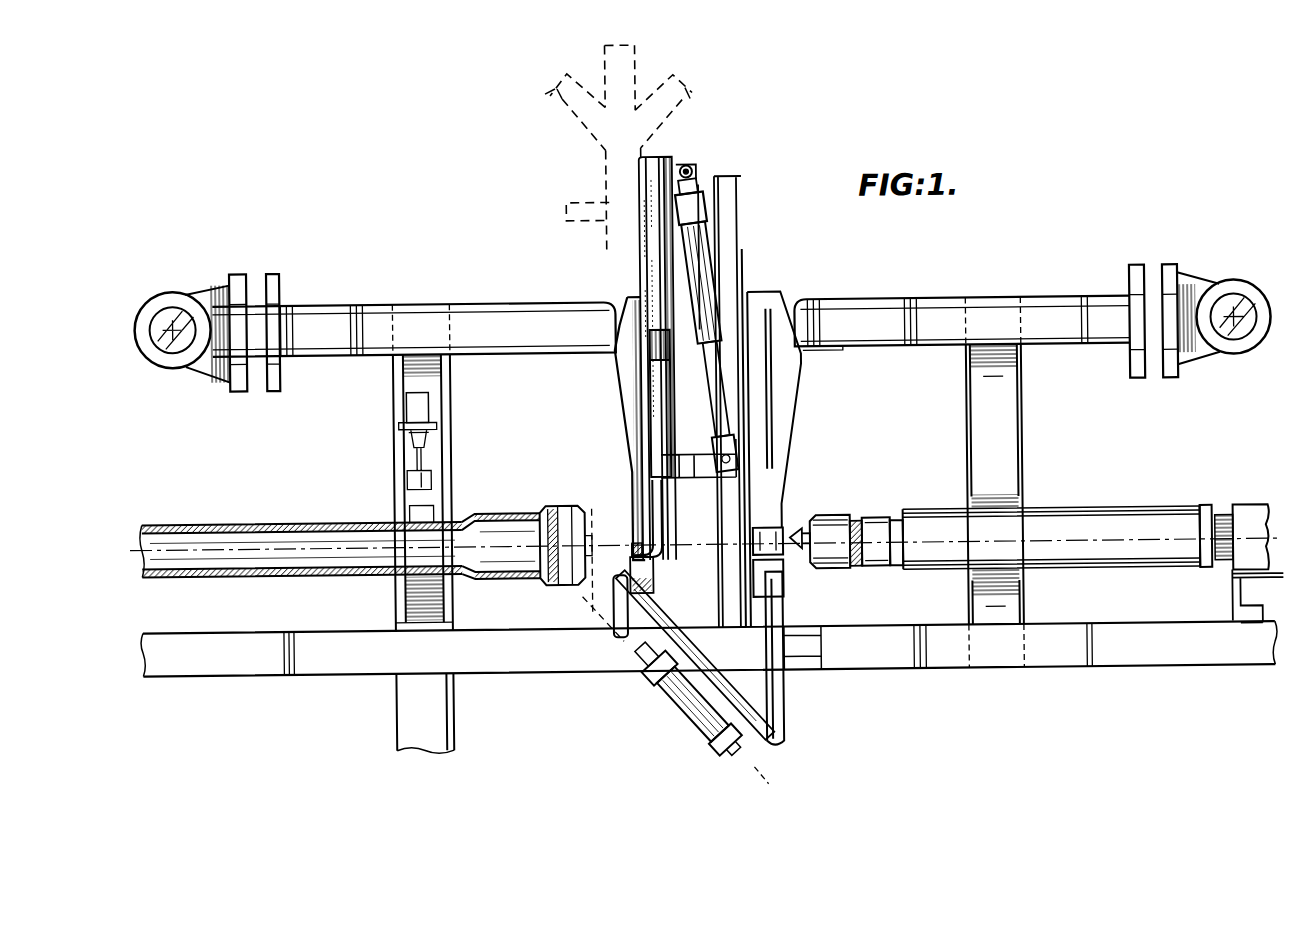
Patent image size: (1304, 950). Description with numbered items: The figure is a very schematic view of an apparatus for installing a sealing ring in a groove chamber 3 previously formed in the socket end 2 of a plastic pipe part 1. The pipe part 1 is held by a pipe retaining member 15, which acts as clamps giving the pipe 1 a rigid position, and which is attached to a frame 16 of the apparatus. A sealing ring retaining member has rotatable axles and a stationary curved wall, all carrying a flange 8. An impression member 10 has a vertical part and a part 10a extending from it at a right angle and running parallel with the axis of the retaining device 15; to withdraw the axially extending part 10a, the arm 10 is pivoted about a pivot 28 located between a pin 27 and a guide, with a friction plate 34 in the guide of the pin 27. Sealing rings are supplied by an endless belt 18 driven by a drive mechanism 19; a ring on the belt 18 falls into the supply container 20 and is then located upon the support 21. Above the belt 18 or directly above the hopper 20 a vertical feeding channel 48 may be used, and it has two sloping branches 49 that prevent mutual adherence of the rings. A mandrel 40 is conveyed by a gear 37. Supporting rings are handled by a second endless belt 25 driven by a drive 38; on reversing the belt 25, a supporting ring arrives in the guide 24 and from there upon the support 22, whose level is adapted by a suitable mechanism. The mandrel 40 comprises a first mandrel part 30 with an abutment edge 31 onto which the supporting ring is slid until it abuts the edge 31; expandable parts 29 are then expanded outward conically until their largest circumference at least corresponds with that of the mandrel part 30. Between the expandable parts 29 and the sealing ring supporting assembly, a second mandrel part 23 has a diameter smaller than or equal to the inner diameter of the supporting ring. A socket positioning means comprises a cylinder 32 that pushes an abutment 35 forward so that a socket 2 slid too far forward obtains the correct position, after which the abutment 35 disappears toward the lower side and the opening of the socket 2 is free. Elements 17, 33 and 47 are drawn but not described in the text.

The plastic pipe part 1 is at (235, 518).
The socket end 2 is at (503, 513).
The groove chamber 3 is at (552, 506).
The flange 8 is at (792, 532).
The impression member 10 is at (663, 512).
The axially extending part of impression member 10a is at (658, 565).
The pipe retaining member 15 is at (414, 592).
The frame 16 is at (411, 700).
The vertical guide bar 17 is at (655, 283).
The endless belt 18 is at (326, 303).
The drive mechanism 19 is at (165, 306).
The supply container 20 is at (639, 398).
The support 21 is at (658, 588).
The support 22 is at (786, 561).
The second mandrel part 23 is at (832, 530).
The guide 24 is at (785, 384).
The endless belt 25 is at (990, 302).
The pin 27 is at (670, 378).
The pivot 28 is at (702, 171).
The expandable parts 29 is at (858, 569).
The first mandrel part 30 is at (877, 527).
The abutment edge 31 is at (887, 573).
The cylinder 32 is at (670, 702).
The inclined plate 33 is at (721, 688).
The friction plate 34 is at (678, 260).
The abutment 35 is at (620, 570).
The gear 37 is at (1247, 564).
The drive 38 is at (1252, 364).
The mandrel 40 is at (1112, 520).
The dashed position box 47 is at (576, 211).
The vertical feeding channel 48 is at (620, 60).
The sloping branches 49 is at (577, 101).